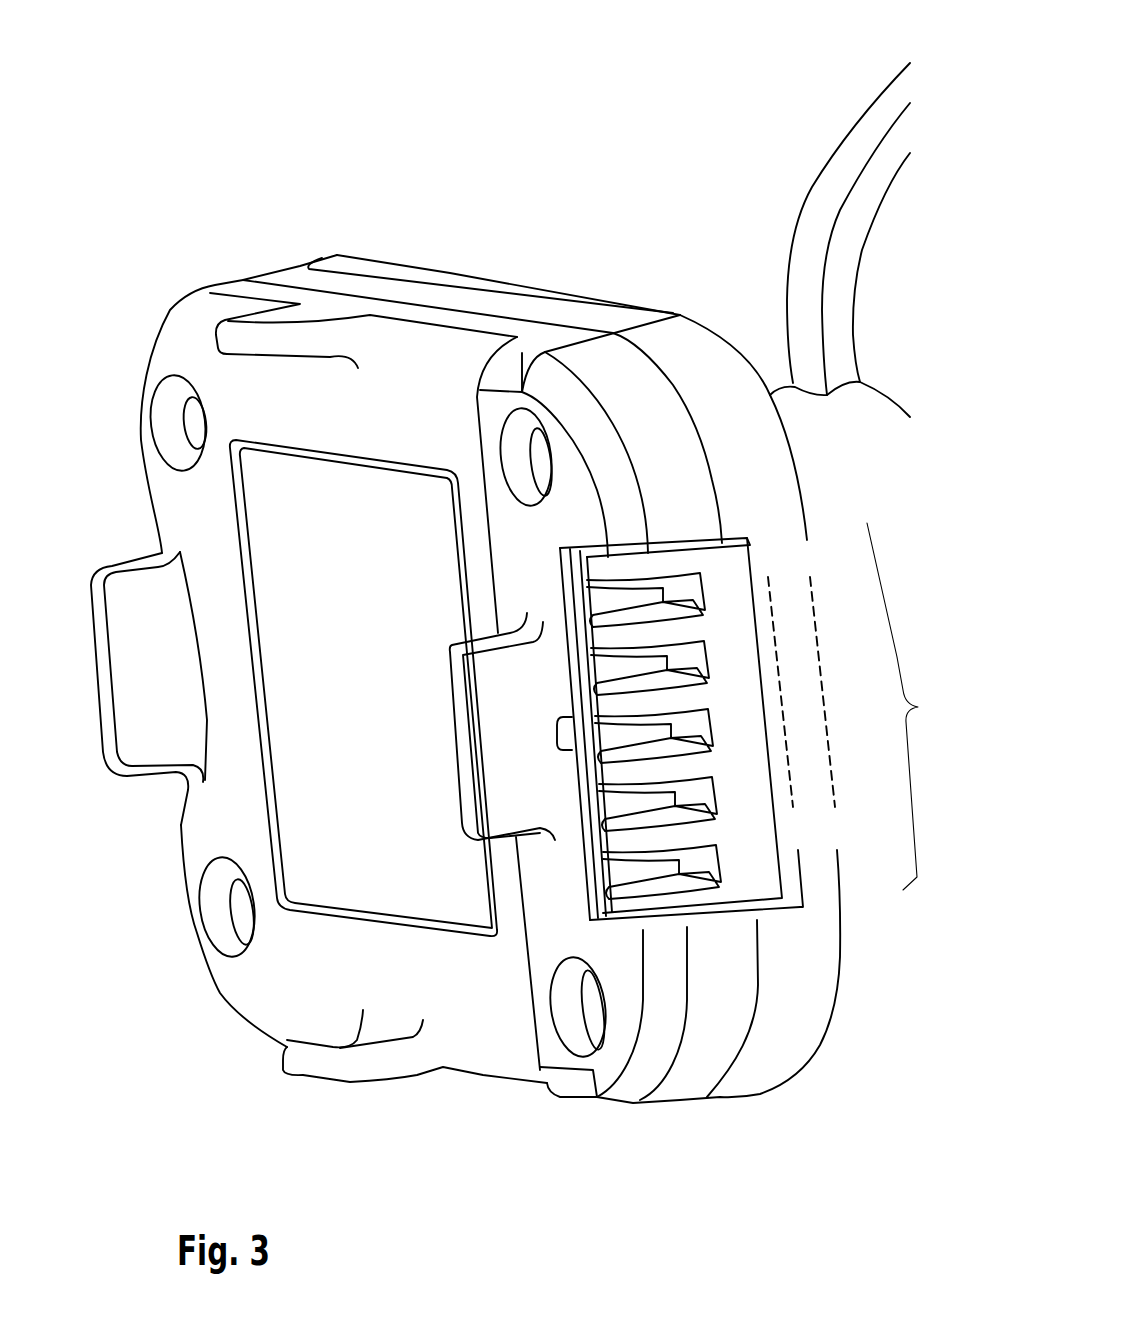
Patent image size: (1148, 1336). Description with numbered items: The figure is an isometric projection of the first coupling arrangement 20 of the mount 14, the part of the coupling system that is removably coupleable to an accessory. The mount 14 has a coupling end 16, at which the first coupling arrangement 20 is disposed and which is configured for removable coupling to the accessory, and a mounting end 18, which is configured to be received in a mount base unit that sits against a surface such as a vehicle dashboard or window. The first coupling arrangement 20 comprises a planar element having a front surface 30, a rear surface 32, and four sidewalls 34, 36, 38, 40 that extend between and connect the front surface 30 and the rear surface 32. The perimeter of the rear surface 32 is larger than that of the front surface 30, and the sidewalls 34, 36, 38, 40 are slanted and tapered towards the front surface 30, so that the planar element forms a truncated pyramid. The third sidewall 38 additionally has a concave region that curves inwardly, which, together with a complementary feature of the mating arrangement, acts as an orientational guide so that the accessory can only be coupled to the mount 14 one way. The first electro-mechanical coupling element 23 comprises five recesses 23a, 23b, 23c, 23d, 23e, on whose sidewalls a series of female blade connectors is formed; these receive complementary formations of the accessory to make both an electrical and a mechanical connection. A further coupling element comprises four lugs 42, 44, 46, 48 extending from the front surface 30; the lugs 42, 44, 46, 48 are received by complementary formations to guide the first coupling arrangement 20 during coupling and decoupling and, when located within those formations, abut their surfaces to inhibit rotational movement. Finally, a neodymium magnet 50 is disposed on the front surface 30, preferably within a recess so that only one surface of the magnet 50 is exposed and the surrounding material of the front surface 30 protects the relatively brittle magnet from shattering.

The mount 14 is at (205, 24).
The coupling end 16 is at (593, 313).
The mounting end 18 is at (887, 223).
The first coupling arrangement 20 is at (380, 155).
The first electro-mechanical coupling element 23 is at (838, 698).
The recess 23a is at (683, 590).
The recess 23b is at (693, 657).
The recess 23c is at (697, 730).
The recess 23d is at (700, 797).
The recess 23e is at (705, 865).
The front surface 30 is at (230, 407).
The rear surface 32 is at (741, 340).
The sidewall 34 is at (788, 945).
The sidewall 36 is at (450, 297).
The third sidewall 38 is at (180, 878).
The sidewall 40 is at (487, 1077).
The lug 42 is at (277, 317).
The lug 44 is at (440, 647).
The lug 46 is at (333, 1040).
The lug 48 is at (147, 620).
The neodymium magnet 50 is at (307, 727).